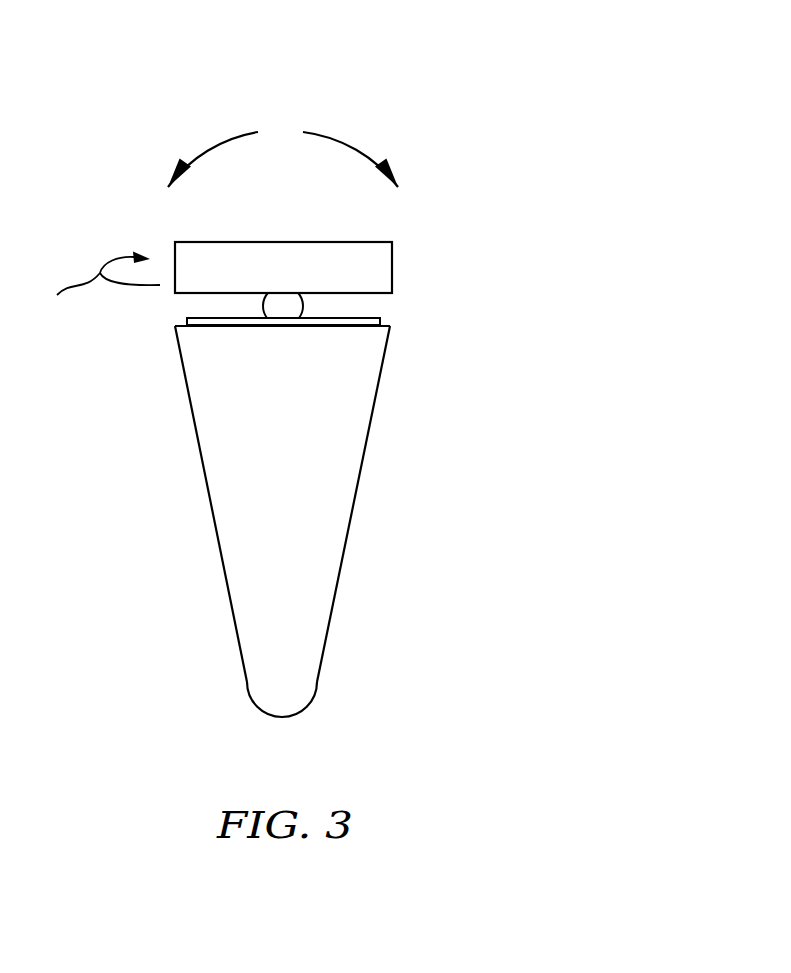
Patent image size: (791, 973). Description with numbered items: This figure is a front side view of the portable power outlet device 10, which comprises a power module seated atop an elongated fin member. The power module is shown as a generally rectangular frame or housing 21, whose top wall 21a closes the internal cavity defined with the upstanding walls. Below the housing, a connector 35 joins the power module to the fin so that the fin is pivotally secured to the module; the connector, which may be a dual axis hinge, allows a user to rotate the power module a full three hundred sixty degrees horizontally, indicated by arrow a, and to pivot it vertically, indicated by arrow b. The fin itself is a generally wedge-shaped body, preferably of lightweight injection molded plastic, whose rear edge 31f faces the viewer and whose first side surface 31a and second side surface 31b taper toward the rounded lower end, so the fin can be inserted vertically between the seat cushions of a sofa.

The portable power outlet device 10 is at (90, 101).
The power module housing 21 is at (293, 278).
The top wall 21a is at (313, 240).
The connector 35 is at (288, 306).
The rear edge 31f is at (300, 475).
The first side surface 31a is at (210, 517).
The second side surface 31b is at (353, 522).